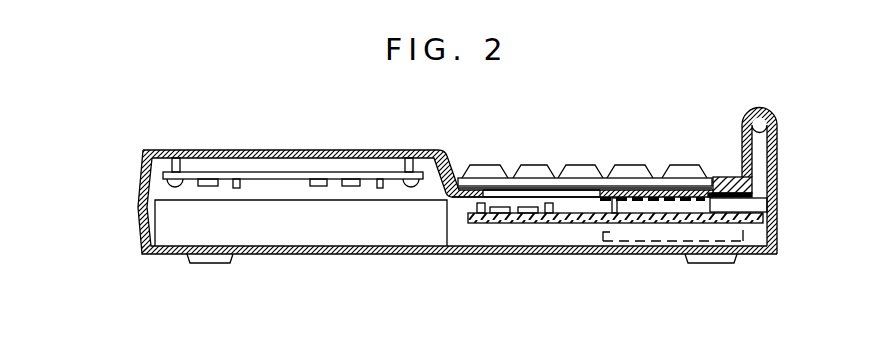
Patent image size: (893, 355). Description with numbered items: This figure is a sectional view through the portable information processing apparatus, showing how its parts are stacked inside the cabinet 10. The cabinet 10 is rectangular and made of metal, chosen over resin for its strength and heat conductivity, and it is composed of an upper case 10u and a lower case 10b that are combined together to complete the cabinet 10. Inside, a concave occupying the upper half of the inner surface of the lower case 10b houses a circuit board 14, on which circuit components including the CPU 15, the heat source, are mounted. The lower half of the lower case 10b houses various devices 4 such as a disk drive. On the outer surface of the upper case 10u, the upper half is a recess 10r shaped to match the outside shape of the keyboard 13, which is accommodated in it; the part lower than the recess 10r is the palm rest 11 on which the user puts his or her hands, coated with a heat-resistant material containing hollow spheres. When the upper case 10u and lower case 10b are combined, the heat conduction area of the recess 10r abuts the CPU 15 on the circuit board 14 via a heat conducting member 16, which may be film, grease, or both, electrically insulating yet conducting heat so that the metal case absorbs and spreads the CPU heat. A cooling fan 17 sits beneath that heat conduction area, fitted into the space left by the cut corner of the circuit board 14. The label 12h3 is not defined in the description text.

The cabinet 10 is at (55, 155).
The upper case 10u is at (143, 171).
The lower case 10b is at (140, 228).
The recess 10r is at (473, 190).
The palm rest 11 is at (192, 150).
The keyboard 13 is at (535, 167).
The opening 12h3 is at (577, 190).
The circuit board 14 is at (522, 218).
The CPU 15 is at (700, 207).
The heat conducting member 16 is at (680, 201).
The cooling fan 17 is at (603, 237).
The various devices 4 is at (270, 225).